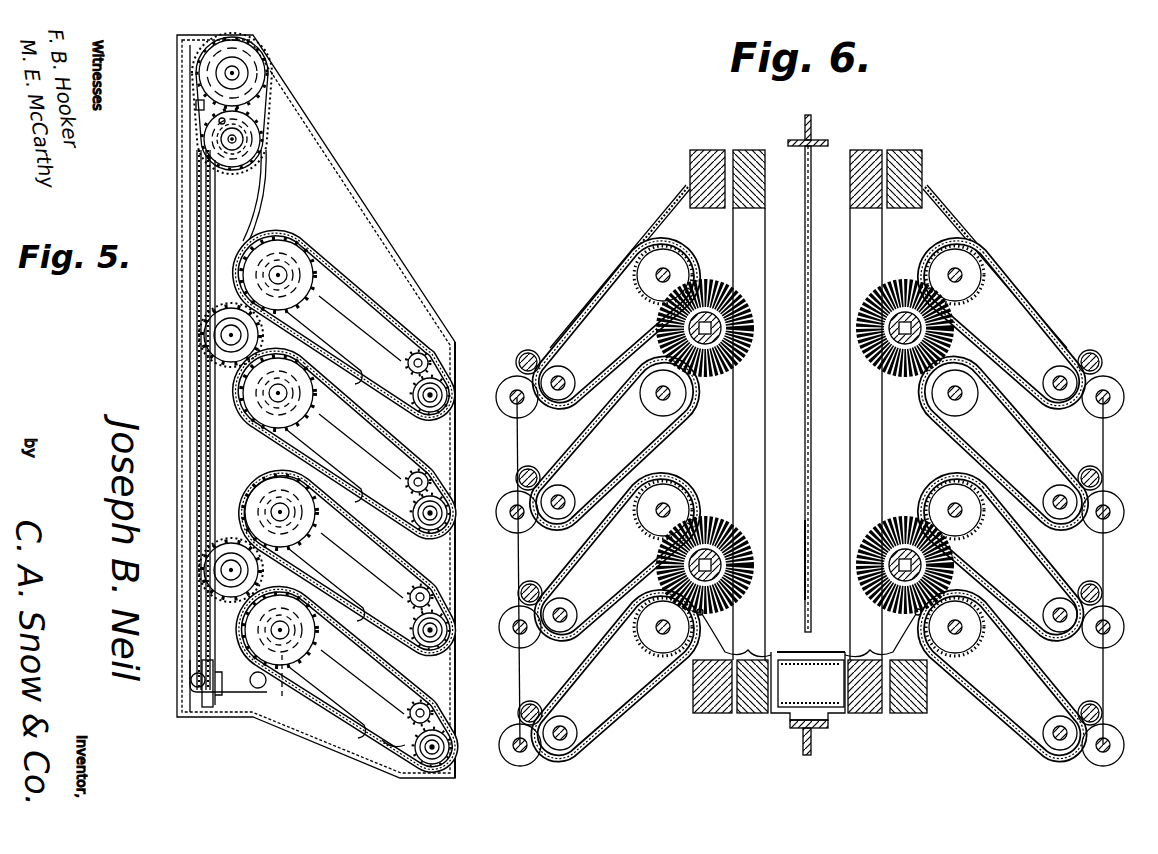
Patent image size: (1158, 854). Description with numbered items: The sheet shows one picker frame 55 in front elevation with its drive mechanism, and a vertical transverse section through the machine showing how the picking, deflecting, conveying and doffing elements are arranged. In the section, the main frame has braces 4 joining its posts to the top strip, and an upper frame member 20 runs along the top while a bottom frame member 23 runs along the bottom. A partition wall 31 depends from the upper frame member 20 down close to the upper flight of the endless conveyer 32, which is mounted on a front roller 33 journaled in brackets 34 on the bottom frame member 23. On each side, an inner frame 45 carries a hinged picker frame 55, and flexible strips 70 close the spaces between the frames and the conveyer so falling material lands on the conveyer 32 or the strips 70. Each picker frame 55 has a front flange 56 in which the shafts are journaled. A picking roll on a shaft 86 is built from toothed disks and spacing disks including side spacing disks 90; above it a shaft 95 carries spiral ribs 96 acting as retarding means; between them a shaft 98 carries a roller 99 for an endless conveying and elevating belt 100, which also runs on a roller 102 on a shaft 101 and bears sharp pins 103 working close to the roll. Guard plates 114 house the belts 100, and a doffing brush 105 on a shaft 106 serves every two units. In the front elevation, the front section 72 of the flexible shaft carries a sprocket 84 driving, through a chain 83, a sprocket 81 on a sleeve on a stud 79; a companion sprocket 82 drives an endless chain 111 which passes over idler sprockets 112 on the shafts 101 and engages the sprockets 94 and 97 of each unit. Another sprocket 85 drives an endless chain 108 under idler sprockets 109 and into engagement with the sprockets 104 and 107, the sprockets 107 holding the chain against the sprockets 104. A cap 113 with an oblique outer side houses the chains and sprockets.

In FIG. 6, the brace 4 is at (815, 389).
In FIG. 6, the upper frame member 20 is at (812, 132).
In FIG. 6, the bottom frame member 23 is at (812, 745).
In FIG. 6, the partition wall 31 is at (812, 545).
In FIG. 6, the endless conveyer 32 is at (815, 652).
In FIG. 6, the front roller 33 is at (811, 683).
In FIG. 6, the bracket 34 is at (772, 716).
In FIG. 6, the inner frame 45 is at (755, 150).
In FIG. 6, the picker frame 55 is at (716, 150).
In FIG. 5, the flange 56 is at (345, 262).
In FIG. 6, the flange 56 is at (1104, 442).
In FIG. 6, the flexible strip 70 is at (700, 660).
In FIG. 5, the front section of flexible shaft 72 is at (246, 136).
In FIG. 5, the stud 79 is at (230, 73).
In FIG. 5, the sprocket 81 is at (220, 122).
In FIG. 5, the sprocket 82 is at (198, 105).
In FIG. 5, the chain 83 is at (213, 137).
In FIG. 5, the sprocket 84 is at (238, 131).
In FIG. 5, the sprocket 85 is at (258, 172).
In FIG. 5, the shaft 86 is at (456, 347).
In FIG. 6, the shaft 86 is at (512, 400).
In FIG. 6, the side spacing disk 90 is at (514, 385).
In FIG. 5, the sprocket 94 is at (450, 518).
In FIG. 5, the shaft 95 is at (433, 380).
In FIG. 6, the shaft 95 is at (537, 348).
In FIG. 6, the spiral rib 96 is at (526, 352).
In FIG. 5, the sprocket 97 is at (400, 460).
In FIG. 5, the shaft 98 is at (390, 744).
In FIG. 6, the shaft 98 is at (563, 378).
In FIG. 6, the roller 99 is at (558, 402).
In FIG. 6, the conveying and elevating belt 100 is at (995, 462).
In FIG. 5, the shaft 101 is at (278, 512).
In FIG. 6, the shaft 101 is at (660, 270).
In FIG. 6, the roller 102 is at (640, 278).
In FIG. 6, the pin 103 is at (577, 320).
In FIG. 5, the sprocket 104 is at (300, 258).
In FIG. 6, the doffing brush 105 is at (662, 318).
In FIG. 5, the shaft 106 is at (228, 335).
In FIG. 6, the shaft 106 is at (700, 285).
In FIG. 5, the sprocket 107 is at (220, 357).
In FIG. 5, the endless chain 108 is at (190, 174).
In FIG. 5, the idler sprocket 109 is at (255, 686).
In FIG. 5, the endless chain 111 is at (205, 207).
In FIG. 5, the idler sprocket 112 is at (282, 697).
In FIG. 5, the cap 113 is at (412, 273).
In FIG. 6, the guard plate 114 is at (622, 420).